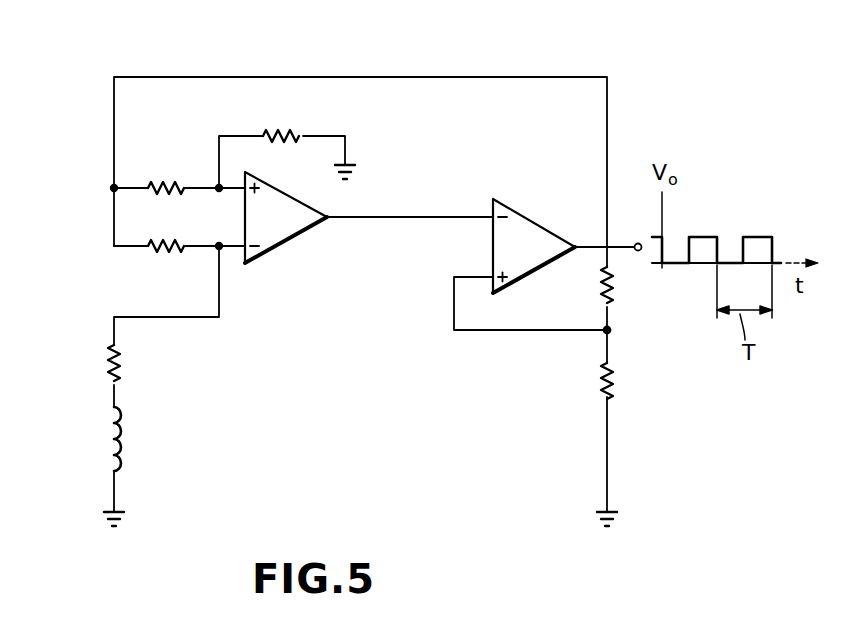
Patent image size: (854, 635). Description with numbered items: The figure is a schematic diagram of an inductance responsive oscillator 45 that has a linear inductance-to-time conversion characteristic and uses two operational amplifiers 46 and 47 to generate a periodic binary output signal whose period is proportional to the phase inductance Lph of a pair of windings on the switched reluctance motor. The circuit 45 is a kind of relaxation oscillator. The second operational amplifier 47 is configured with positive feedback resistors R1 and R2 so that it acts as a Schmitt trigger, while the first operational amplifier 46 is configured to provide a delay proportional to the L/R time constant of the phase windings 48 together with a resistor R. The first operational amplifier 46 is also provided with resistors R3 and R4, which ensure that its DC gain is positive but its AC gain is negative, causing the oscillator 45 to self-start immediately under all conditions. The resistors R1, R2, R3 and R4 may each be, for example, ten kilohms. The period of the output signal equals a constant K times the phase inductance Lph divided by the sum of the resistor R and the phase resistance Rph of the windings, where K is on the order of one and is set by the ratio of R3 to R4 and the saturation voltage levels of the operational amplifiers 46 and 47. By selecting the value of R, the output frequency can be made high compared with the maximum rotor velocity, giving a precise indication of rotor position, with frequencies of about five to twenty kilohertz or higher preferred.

The inductance responsive oscillator 45 is at (622, 63).
The first operational amplifier 46 is at (284, 247).
The second operational amplifier 47 is at (530, 220).
The phase windings 48 is at (128, 386).
The resistor R is at (167, 255).
The positive feedback resistor R1 is at (600, 292).
The positive feedback resistor R2 is at (614, 380).
The resistor R3 is at (170, 185).
The resistor R4 is at (290, 130).
The phase resistance Rph is at (122, 376).
The phase inductance Lph is at (121, 436).